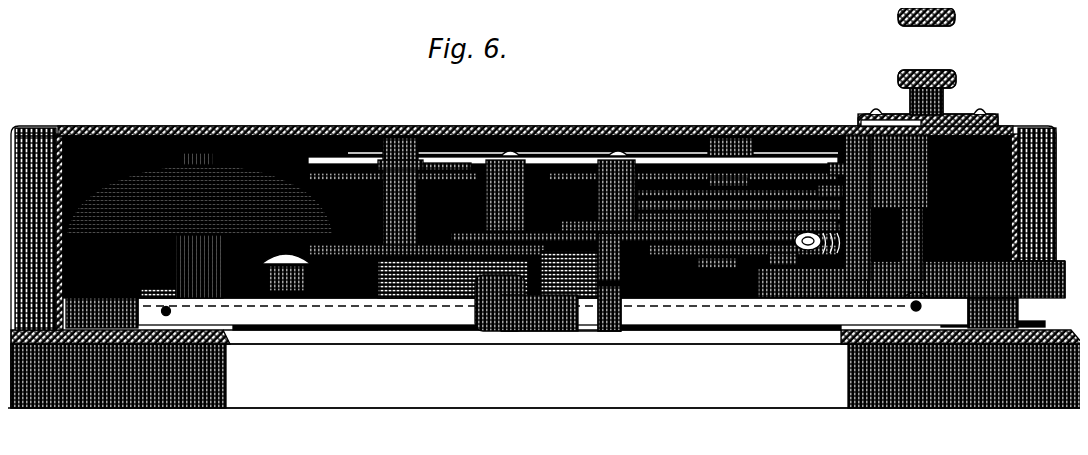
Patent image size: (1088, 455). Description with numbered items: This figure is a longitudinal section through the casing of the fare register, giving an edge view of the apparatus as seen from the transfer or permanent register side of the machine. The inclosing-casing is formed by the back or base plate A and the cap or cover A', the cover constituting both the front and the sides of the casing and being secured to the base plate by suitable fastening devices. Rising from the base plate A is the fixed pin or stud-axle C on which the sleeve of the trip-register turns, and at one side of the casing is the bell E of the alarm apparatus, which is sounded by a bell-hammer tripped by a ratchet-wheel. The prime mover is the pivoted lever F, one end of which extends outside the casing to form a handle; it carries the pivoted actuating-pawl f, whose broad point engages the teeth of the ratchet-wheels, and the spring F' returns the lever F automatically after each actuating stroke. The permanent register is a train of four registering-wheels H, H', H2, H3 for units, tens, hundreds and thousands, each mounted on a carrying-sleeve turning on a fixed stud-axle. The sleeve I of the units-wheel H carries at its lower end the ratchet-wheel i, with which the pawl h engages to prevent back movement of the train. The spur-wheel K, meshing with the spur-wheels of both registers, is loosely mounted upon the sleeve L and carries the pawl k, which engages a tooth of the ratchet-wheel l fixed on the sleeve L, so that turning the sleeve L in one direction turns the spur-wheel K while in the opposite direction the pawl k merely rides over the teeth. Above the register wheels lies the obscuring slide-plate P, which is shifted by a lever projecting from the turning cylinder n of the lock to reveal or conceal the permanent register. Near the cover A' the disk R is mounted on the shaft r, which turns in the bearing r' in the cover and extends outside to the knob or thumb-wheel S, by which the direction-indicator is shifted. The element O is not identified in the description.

The base plate A is at (544, 303).
The cover A' is at (533, 216).
The bell E is at (199, 225).
The slide-plate P is at (380, 132).
The thousands registering-wheel H3 is at (442, 150).
The hundreds registering-wheel H2 is at (530, 150).
The stud-axle C is at (582, 150).
The tens registering-wheel H' is at (739, 166).
The sleeve I is at (732, 170).
The units registering-wheel H is at (644, 172).
The sleeve L is at (834, 118).
The turning cylinder n is at (878, 118).
The knob S is at (918, 17).
The disk R is at (878, 0).
The shaft r is at (902, 36).
The bearing r' is at (965, 13).
The spur-wheel K is at (830, 185).
The pawl k is at (728, 188).
The ratchet-wheel l is at (738, 218).
The spring O is at (798, 242).
The pawl h is at (571, 282).
The ratchet-wheel i is at (718, 271).
The actuating-pawl f is at (783, 271).
The lever F is at (919, 279).
The spring F' is at (542, 308).